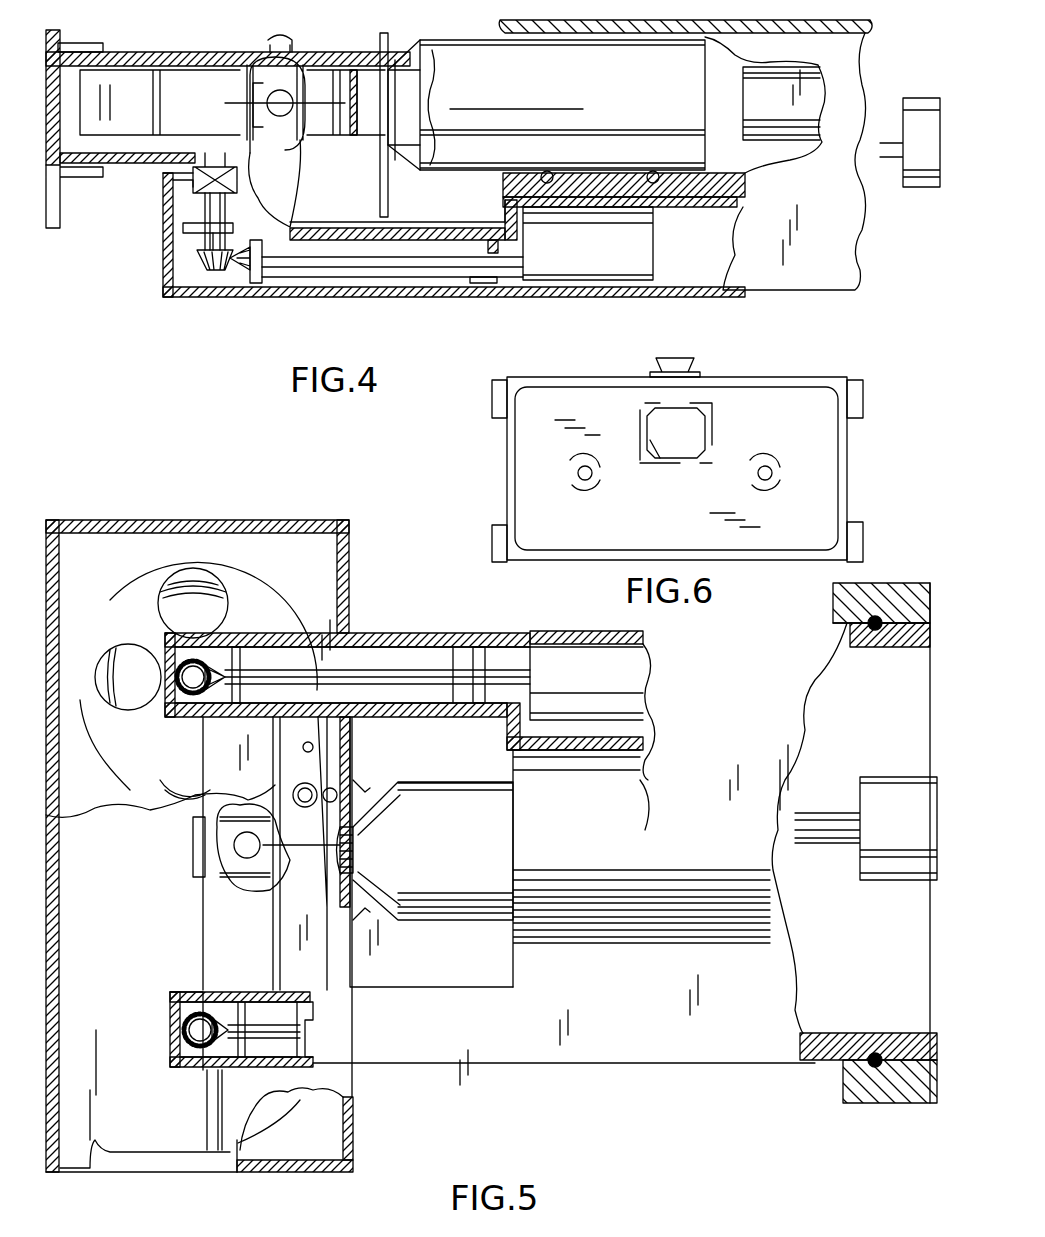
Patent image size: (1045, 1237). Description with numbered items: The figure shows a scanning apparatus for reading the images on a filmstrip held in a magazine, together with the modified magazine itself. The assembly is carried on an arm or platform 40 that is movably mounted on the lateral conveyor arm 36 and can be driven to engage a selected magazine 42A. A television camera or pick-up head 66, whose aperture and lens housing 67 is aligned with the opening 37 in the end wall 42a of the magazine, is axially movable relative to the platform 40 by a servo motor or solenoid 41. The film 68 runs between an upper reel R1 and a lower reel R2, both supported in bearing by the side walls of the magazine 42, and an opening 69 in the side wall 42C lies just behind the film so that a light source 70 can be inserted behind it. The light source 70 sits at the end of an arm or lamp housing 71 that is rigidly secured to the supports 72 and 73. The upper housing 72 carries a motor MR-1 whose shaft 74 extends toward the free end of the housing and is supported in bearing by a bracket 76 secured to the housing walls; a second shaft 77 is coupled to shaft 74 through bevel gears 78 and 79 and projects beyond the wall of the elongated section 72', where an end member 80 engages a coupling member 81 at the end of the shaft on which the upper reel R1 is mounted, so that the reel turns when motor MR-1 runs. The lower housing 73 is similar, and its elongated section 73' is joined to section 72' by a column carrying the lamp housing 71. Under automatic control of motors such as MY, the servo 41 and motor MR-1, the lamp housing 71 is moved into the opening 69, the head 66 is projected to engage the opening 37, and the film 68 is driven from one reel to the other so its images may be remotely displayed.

In FIG. 5, the lateral conveyor arm 36 is at (868, 1103).
In FIG. 6, the opening in end wall 37 is at (690, 360).
In FIG. 5, the opening in end wall 37 is at (352, 800).
In FIG. 4, the arm or platform 40 is at (742, 290).
In FIG. 5, the arm or platform 40 is at (720, 818).
In FIG. 4, the servo motor or solenoid 41 is at (783, 110).
In FIG. 5, the magazine 42 is at (255, 1172).
In FIG. 5, the selected magazine 42A is at (330, 522).
In FIG. 5, the end wall 42a is at (349, 535).
In FIG. 4, the side wall 42C is at (130, 167).
In FIG. 6, the side wall 42C is at (782, 378).
In FIG. 5, the side wall 42C is at (170, 1172).
In FIG. 4, the pick-up head 66 is at (440, 150).
In FIG. 5, the pick-up head 66 is at (480, 920).
In FIG. 4, the aperture and lens housing 67 is at (398, 170).
In FIG. 5, the film 68 is at (340, 757).
In FIG. 4, the opening in side wall 69 is at (307, 155).
In FIG. 6, the opening in side wall 69 is at (665, 458).
In FIG. 4, the light source 70 is at (240, 103).
In FIG. 4, the arm 71 is at (298, 212).
In FIG. 5, the upper housing 72 is at (575, 671).
In FIG. 4, the elongated section of upper housing 72' is at (152, 235).
In FIG. 5, the elongated section of upper housing 72' is at (347, 654).
In FIG. 5, the lower housing 73 is at (492, 933).
In FIG. 4, the elongated section of lower housing 73' is at (454, 304).
In FIG. 5, the elongated section of lower housing 73' is at (307, 1044).
In FIG. 4, the shaft 74 is at (410, 277).
In FIG. 5, the shaft 74 is at (355, 677).
In FIG. 4, the bracket 76 is at (245, 283).
In FIG. 5, the bracket 76 is at (200, 695).
In FIG. 4, the second shaft 77 is at (222, 212).
In FIG. 5, the bevel gear 78 is at (236, 647).
In FIG. 4, the bevel gear 79 is at (200, 272).
In FIG. 5, the bevel gear 79 is at (178, 690).
In FIG. 4, the end member 80 is at (200, 195).
In FIG. 4, the coupling member 81 is at (193, 172).
In FIG. 4, the upper reel R1 is at (160, 102).
In FIG. 5, the upper reel R1 is at (108, 600).
In FIG. 5, the lower reel R2 is at (278, 1106).
In FIG. 4, the motor MR-1 is at (593, 260).
In FIG. 5, the motor MR-1 is at (593, 685).
In FIG. 4, the motor MY is at (928, 98).
In FIG. 5, the motor MY is at (908, 785).